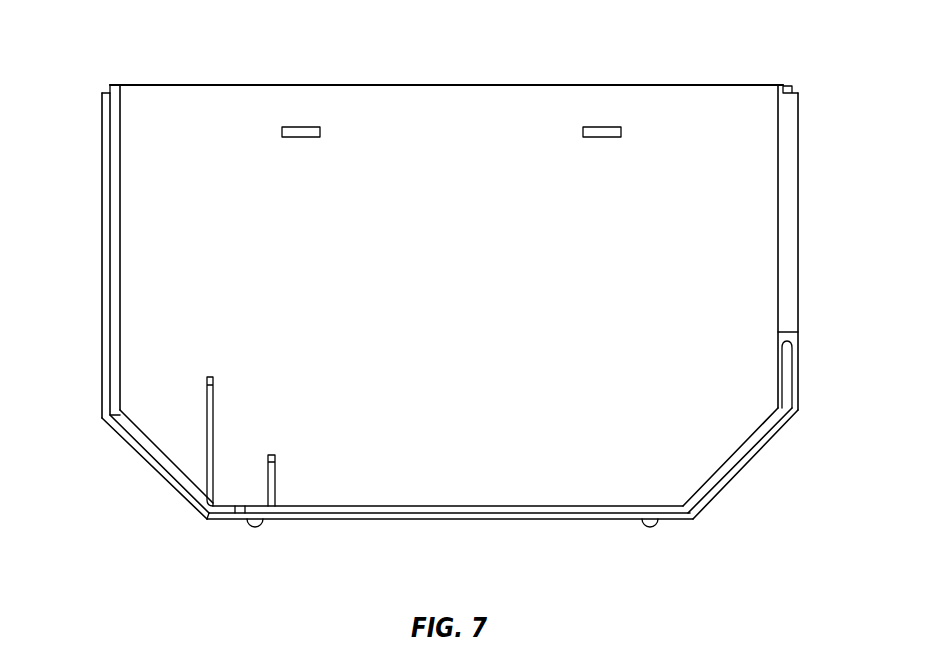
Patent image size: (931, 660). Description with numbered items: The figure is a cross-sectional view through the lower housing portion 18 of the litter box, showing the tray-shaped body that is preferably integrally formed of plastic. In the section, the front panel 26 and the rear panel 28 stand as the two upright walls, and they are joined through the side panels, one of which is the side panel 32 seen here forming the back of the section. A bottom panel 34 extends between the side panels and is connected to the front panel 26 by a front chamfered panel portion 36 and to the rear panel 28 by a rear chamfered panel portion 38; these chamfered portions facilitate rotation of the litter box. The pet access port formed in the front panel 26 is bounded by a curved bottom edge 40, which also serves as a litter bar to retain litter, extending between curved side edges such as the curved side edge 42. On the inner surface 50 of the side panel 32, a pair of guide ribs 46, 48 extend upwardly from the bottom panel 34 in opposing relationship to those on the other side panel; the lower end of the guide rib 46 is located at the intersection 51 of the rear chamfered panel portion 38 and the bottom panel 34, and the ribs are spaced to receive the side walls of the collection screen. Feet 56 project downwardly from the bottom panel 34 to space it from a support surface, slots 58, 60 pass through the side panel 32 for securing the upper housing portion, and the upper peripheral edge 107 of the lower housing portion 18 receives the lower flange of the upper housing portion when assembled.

The lower housing portion 18 is at (448, 310).
The front panel 26 is at (798, 353).
The rear panel 28 is at (101, 192).
The side panel 32 is at (417, 95).
The bottom panel 34 is at (480, 520).
The front chamfered panel portion 36 is at (752, 465).
The rear chamfered panel portion 38 is at (166, 480).
The curved bottom edge 40 is at (790, 342).
The curved side edge 42 is at (790, 203).
The guide rib 46 is at (213, 398).
The guide rib 48 is at (277, 470).
The inner surface 50 is at (433, 307).
The intersection 51 is at (207, 521).
The feet 56 is at (255, 528).
The slot 58 is at (603, 137).
The slot 60 is at (300, 137).
The upper peripheral edge 107 is at (790, 86).